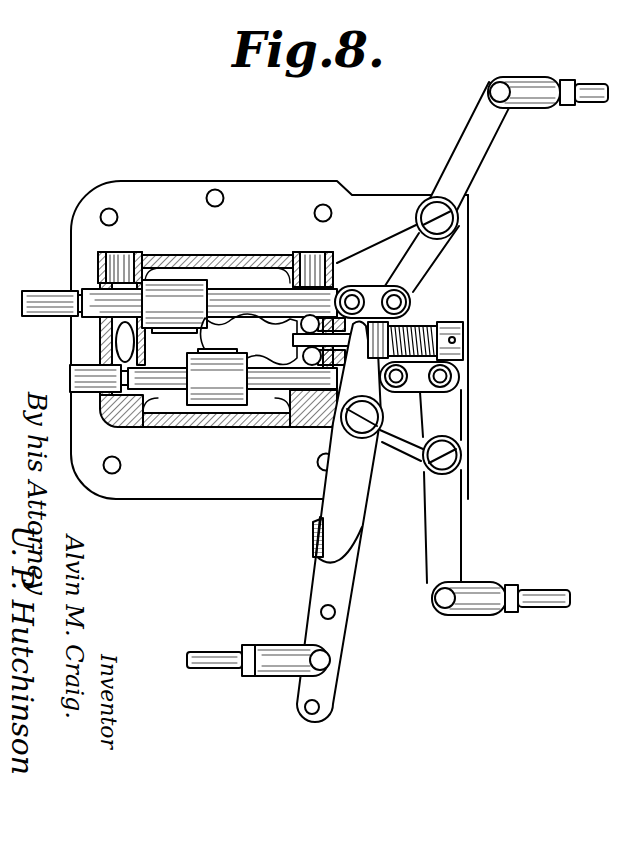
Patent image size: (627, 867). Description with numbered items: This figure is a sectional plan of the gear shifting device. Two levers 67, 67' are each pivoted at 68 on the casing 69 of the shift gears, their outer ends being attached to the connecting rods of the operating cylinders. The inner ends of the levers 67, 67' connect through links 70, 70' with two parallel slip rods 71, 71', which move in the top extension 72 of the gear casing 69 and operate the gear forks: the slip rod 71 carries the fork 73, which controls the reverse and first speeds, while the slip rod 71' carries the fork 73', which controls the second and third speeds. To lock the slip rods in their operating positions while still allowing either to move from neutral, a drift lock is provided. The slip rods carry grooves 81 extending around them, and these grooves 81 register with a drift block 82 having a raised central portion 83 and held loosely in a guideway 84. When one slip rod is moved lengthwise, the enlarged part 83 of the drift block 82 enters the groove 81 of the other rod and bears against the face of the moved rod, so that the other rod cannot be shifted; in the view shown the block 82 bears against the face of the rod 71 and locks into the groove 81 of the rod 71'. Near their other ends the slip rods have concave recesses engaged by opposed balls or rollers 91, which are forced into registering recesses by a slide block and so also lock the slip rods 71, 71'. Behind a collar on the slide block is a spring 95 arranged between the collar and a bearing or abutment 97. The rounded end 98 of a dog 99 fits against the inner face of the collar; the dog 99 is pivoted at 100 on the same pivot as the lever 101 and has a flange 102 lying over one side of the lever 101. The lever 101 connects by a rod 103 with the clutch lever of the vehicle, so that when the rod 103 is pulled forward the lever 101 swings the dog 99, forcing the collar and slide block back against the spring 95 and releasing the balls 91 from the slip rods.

The lever 67 is at (516, 150).
The lever 67' is at (497, 542).
The pivot 68 is at (462, 222).
The casing of the shift gears 69 is at (462, 270).
The link 70 is at (397, 257).
The link 70' is at (454, 401).
The slip rod 71 is at (209, 270).
The slip rod 71' is at (232, 417).
The top extension of the gear casing 72 is at (221, 265).
The fork 73 is at (181, 280).
The fork 73' is at (217, 418).
The grooves 81 is at (73, 292).
The drift block 82 is at (100, 355).
The raised central portion 83 is at (138, 350).
The guideway 84 is at (100, 330).
The balls or rollers 91 is at (307, 363).
The spring 95 is at (440, 330).
The bearing or abutment 97 is at (463, 347).
The rounded end of dog 98 is at (372, 338).
The dog 99 is at (383, 397).
The pivot 100 is at (388, 445).
The lever 101 is at (343, 577).
The flange 102 is at (310, 555).
The rod 103 is at (220, 657).